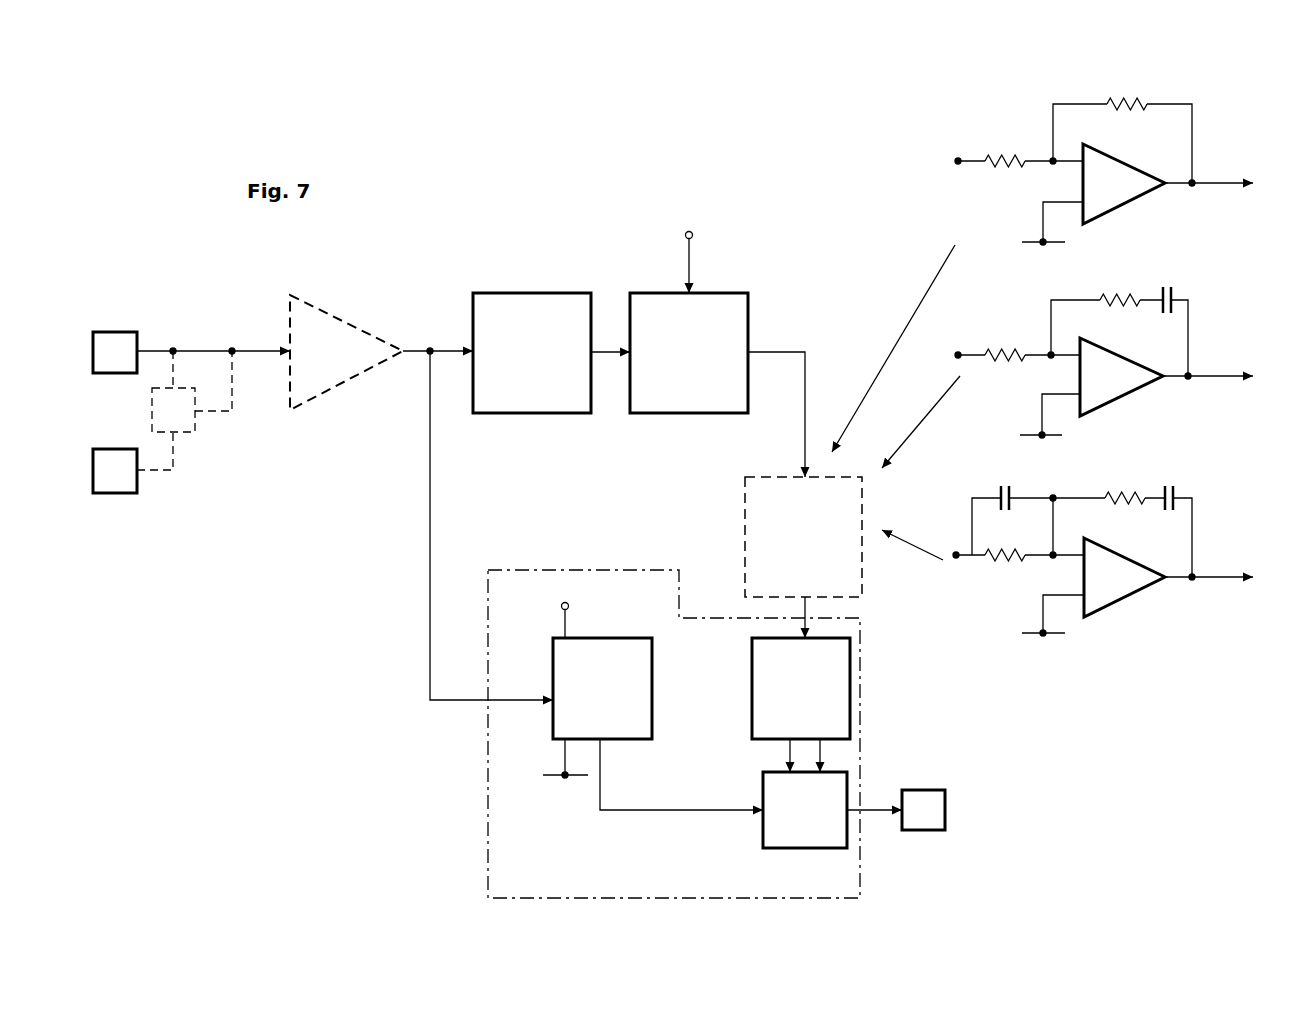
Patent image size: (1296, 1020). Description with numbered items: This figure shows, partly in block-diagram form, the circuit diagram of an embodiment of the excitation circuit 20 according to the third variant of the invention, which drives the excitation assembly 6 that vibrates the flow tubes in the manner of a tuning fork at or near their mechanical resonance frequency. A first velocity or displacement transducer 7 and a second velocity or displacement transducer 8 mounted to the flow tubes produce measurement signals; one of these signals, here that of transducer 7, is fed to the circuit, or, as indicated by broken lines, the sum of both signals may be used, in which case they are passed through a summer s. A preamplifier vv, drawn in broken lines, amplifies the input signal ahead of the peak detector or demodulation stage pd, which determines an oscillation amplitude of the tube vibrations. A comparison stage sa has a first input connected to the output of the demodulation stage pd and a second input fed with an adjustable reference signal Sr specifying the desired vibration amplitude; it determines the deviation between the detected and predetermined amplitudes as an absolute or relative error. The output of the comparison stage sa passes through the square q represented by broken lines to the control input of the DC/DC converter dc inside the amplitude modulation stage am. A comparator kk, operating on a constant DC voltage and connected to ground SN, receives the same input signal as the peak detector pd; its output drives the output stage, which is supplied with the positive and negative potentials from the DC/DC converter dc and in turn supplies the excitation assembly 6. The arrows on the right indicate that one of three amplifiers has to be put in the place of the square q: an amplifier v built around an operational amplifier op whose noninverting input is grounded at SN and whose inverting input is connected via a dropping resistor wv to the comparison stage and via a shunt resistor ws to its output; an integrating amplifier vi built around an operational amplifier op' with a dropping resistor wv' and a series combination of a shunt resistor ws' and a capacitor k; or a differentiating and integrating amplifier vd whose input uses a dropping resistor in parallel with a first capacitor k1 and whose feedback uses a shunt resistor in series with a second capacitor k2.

The first velocity or displacement transducer 7 is at (113, 335).
The second velocity or displacement transducer 8 is at (113, 494).
The summer s is at (185, 432).
The preamplifier vv is at (352, 338).
The demodulation stage (peak detector) pd is at (538, 303).
The comparison stage sa is at (720, 303).
The reference signal Sr is at (669, 259).
The square represented by broken lines q is at (755, 528).
The amplitude modulation stage am is at (640, 885).
The comparator kk is at (628, 636).
The ground SN is at (542, 763).
The DC/DC converter dc is at (835, 657).
The excitation assembly 6 is at (925, 822).
The excitation circuit 20 is at (365, 710).
The amplifier v is at (1042, 253).
The dropping resistor wv is at (1005, 186).
The shunt resistor ws is at (1127, 82).
The operational amplifier op is at (1141, 187).
The integrating amplifier vi is at (1067, 359).
The dropping resistor wv' is at (1005, 379).
The shunt resistor ws' is at (1121, 278).
The capacitor k is at (1176, 288).
The operational amplifier op' is at (1141, 382).
The differentiating and integrating amplifier vd is at (1067, 540).
The first capacitor k1 is at (1011, 492).
The second capacitor k2 is at (1178, 492).